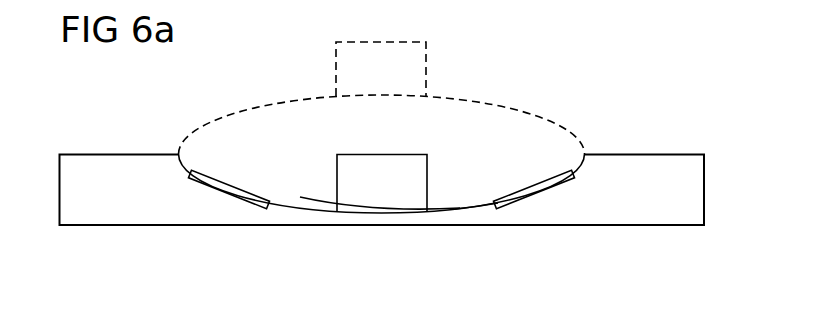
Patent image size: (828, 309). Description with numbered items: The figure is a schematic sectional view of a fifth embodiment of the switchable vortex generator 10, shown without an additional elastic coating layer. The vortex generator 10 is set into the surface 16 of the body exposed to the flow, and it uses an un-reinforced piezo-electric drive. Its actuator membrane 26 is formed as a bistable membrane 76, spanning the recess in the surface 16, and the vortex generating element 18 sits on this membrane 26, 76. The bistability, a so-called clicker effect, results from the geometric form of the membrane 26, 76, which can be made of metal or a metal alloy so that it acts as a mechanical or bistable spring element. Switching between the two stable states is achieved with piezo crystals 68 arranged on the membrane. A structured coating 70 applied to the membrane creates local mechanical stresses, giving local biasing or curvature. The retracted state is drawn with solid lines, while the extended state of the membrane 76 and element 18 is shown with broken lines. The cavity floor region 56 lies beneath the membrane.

The switchable vortex generator 10 is at (500, 66).
The surface 16 is at (663, 152).
The vortex generating element 18 is at (385, 75).
The actuator membrane 26 is at (459, 215).
The cavity floor 56 is at (263, 224).
The piezo crystals 68 is at (222, 188).
The coating 70 is at (478, 190).
The bistable membrane 76 is at (253, 106).